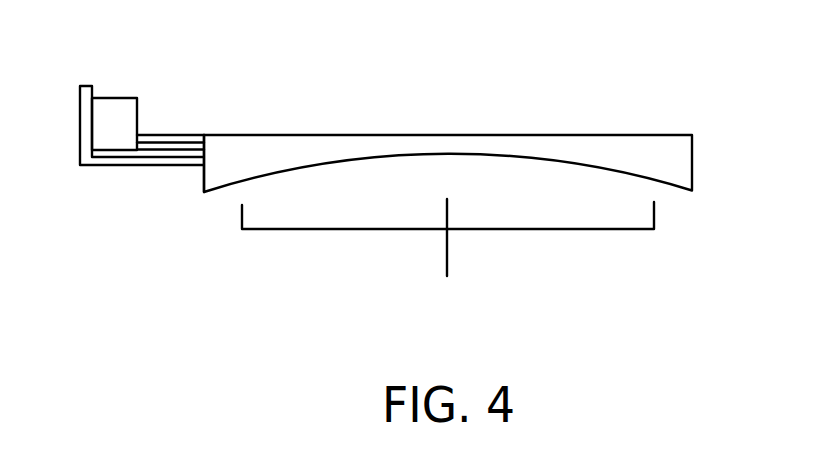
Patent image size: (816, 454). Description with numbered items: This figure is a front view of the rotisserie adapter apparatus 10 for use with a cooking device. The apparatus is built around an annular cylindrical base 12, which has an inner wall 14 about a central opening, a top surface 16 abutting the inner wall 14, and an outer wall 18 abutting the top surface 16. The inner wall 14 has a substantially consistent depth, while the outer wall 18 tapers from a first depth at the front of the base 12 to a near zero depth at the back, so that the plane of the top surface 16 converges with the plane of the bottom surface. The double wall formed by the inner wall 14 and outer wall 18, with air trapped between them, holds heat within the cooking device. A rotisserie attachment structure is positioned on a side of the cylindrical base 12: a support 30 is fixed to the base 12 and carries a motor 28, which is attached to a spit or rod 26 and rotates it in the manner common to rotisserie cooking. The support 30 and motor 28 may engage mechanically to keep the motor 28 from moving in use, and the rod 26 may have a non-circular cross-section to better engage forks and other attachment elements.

The rotisserie adapter apparatus 10 is at (699, 41).
The annular cylindrical base 12 is at (692, 135).
The inner wall 14 is at (655, 219).
The top surface 16 is at (215, 134).
The outer wall 18 is at (449, 255).
The rod 26 is at (176, 134).
The motor 28 is at (119, 97).
The support 30 is at (78, 152).